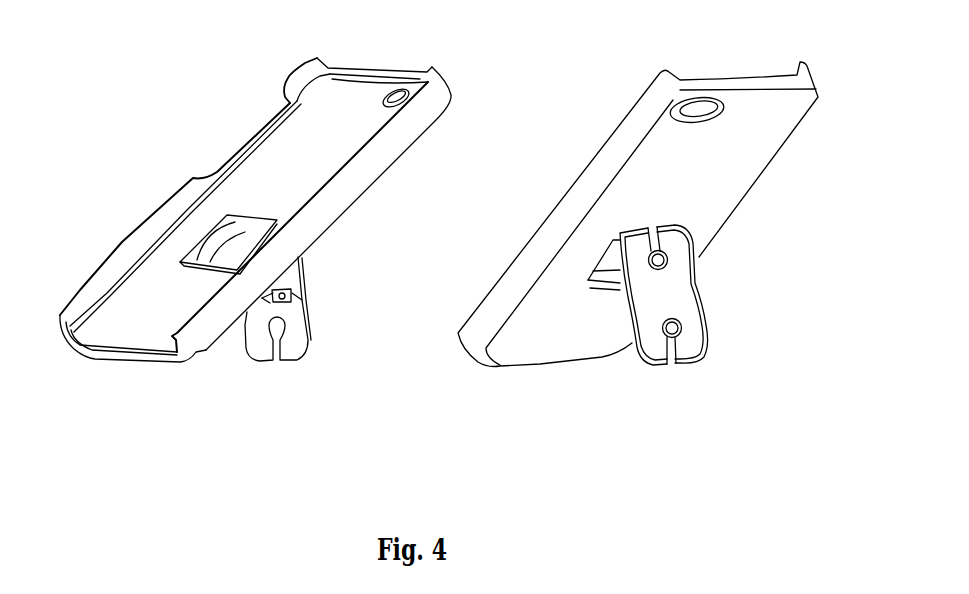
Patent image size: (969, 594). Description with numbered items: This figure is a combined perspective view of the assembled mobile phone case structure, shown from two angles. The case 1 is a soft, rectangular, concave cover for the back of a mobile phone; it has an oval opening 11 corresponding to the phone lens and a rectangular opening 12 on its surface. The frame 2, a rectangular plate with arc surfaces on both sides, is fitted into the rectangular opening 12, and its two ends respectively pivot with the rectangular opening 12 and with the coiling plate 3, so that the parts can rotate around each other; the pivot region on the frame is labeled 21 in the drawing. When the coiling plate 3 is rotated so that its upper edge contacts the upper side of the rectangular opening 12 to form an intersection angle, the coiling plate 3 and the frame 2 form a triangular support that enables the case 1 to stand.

The case 1 is at (440, 121).
The oval opening 11 is at (385, 84).
The rectangular opening 12 is at (228, 252).
The frame 2 is at (262, 300).
The pivot pin 21 is at (298, 305).
The coiling plate 3 is at (303, 271).